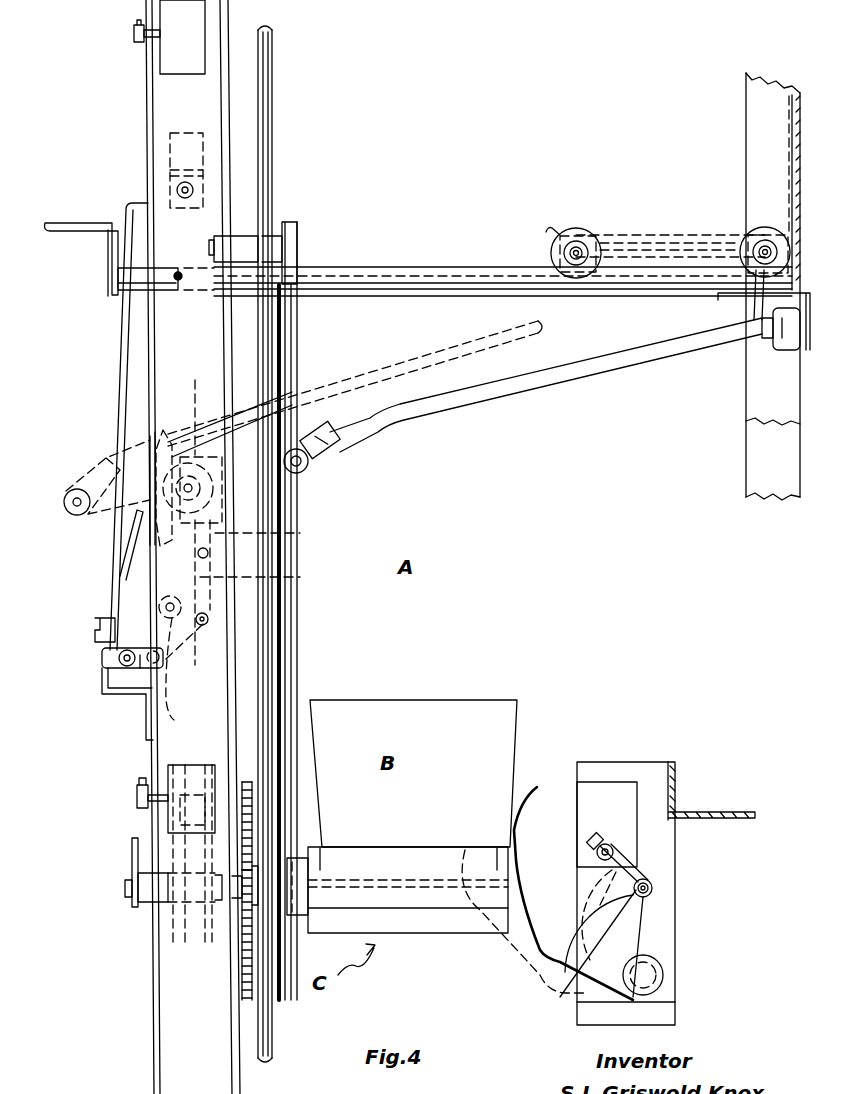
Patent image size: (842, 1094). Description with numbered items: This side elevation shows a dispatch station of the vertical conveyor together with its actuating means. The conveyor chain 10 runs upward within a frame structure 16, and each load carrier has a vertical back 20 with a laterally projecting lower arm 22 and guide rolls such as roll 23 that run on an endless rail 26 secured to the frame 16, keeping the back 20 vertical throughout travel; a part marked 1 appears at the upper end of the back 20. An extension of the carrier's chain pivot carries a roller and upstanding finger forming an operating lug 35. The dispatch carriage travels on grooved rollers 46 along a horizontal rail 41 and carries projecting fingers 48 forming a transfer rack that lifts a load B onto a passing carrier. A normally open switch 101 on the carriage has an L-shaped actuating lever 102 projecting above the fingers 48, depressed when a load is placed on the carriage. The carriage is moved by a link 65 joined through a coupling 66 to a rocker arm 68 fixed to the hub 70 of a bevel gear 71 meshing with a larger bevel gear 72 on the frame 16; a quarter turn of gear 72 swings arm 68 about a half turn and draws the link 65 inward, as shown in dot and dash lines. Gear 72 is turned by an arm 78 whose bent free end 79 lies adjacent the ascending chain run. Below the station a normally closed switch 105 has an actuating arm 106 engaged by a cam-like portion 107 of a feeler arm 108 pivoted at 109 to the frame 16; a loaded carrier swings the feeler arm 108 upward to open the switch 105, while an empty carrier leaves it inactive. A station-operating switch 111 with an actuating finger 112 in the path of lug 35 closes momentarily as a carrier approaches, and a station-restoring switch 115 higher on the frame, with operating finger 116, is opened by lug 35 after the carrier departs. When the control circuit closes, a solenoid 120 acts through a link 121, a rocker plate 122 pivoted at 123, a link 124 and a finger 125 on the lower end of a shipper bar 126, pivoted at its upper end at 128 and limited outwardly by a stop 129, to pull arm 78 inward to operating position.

The clamp block 1 is at (296, 222).
The chain 10 is at (150, 772).
The frame structure 16 is at (755, 97).
The vertical back member 20 is at (298, 636).
The lower arm 22 is at (296, 916).
The guide roll 23 is at (283, 222).
The endless rail 26 is at (274, 78).
The operating lug 35 is at (132, 878).
The rail 41 is at (392, 270).
The grooved roller 46 is at (574, 235).
The fingers 48 is at (630, 248).
The link 65 is at (596, 364).
The coupling 66 is at (322, 456).
The rocker arm 68 is at (288, 492).
The hub 70 is at (191, 517).
The bevel gear 71 is at (197, 395).
The larger bevel gear 72 is at (165, 428).
The arm 78 is at (112, 568).
The bent free end 79 is at (100, 632).
The switch 101 is at (790, 340).
The L-shaped actuating lever 102 is at (758, 308).
The switch 105 is at (594, 792).
The actuating arm 106 is at (652, 878).
The cam-like portion 107 is at (578, 903).
The feeler arm 108 is at (590, 975).
The pivot 109 is at (652, 972).
The station-operating switch 111 is at (170, 812).
The actuating finger 112 is at (136, 790).
The station-restoring switch 115 is at (160, 4).
The operating arm 116 is at (134, 35).
The solenoid 120 is at (300, 532).
The link 121 is at (300, 575).
The rocker plate 122 is at (194, 607).
The pivot 123 is at (170, 700).
The link 124 is at (142, 660).
The finger 125 is at (103, 655).
The shipper bar 126 is at (113, 594).
The pivot 128 is at (205, 182).
The stop 129 is at (100, 686).